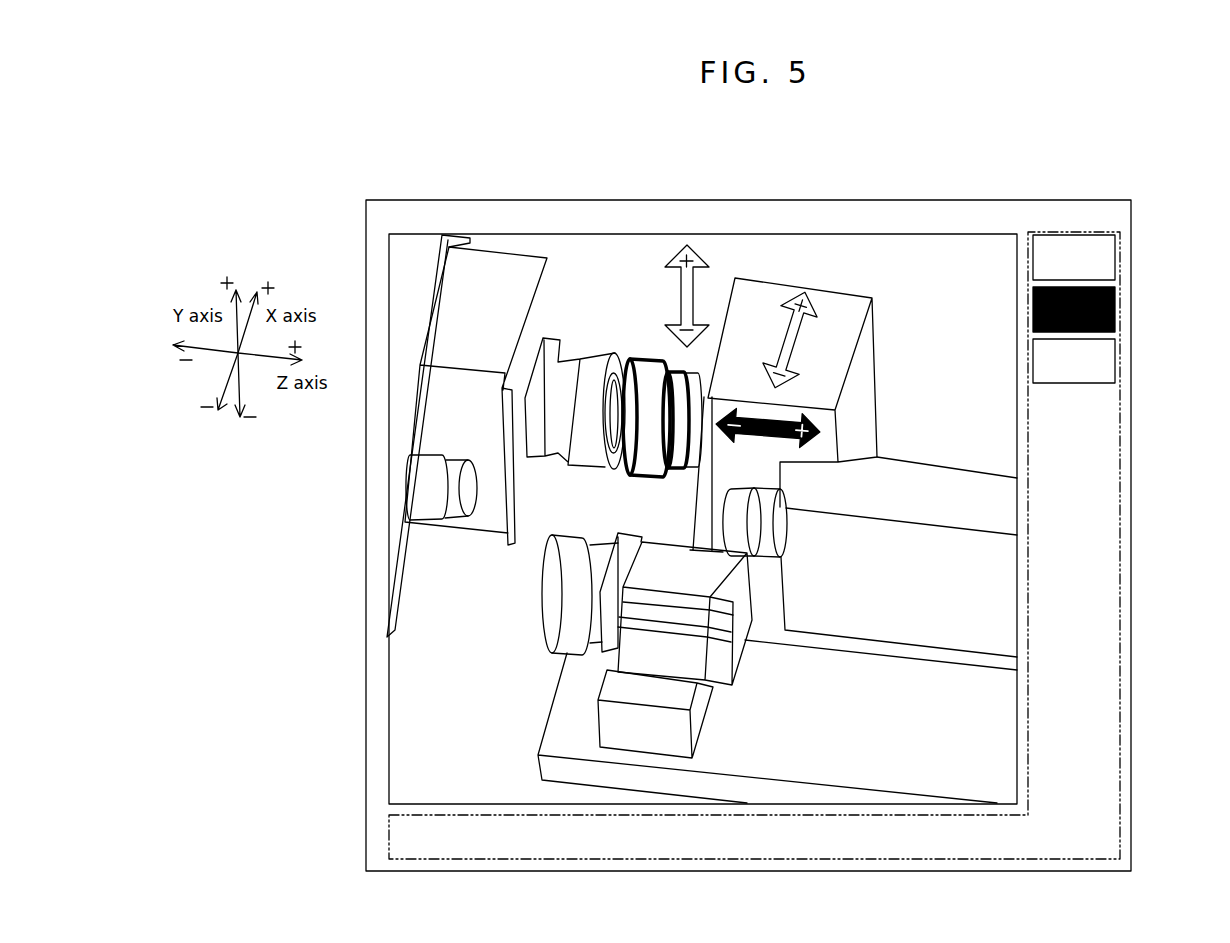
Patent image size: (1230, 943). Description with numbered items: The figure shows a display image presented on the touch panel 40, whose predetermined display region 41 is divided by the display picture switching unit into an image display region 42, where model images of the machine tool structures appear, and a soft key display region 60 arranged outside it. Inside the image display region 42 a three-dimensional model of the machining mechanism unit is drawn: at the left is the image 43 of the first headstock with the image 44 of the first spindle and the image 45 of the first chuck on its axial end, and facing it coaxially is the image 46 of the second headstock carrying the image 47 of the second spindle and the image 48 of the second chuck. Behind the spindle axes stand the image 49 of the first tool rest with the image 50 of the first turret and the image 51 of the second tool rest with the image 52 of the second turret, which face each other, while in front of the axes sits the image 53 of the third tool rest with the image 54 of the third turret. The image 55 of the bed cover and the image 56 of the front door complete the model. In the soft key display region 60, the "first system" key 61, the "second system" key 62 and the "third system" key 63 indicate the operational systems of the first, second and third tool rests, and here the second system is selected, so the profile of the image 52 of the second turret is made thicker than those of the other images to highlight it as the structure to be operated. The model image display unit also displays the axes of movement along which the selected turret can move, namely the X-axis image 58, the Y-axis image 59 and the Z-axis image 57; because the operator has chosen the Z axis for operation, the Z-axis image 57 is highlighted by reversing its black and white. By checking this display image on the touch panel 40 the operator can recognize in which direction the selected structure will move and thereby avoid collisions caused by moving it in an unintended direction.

The touch panel 40 is at (704, 509).
The display region 41 is at (477, 213).
The image display region 42 is at (717, 233).
The image of the first headstock 43 is at (408, 562).
The image of the first spindle 44 is at (430, 513).
The image of the first chuck 45 is at (455, 512).
The image of the second headstock 46 is at (953, 478).
The image of the second spindle 47 is at (765, 503).
The image of the second chuck 48 is at (733, 502).
The image of the first tool rest 49 is at (525, 287).
The image of the first turret 50 is at (590, 367).
The image of the second tool rest 51 is at (852, 315).
The image of the second turret 52 is at (653, 368).
The image of the third tool rest 53 is at (737, 647).
The image of the third turret 54 is at (553, 640).
The image of the bed cover 55 is at (987, 762).
The image of the front door 56 is at (398, 385).
The Z-axis image 57 is at (783, 413).
The X-axis image 58 is at (783, 335).
The Y-axis image 59 is at (697, 290).
The soft key display region 60 is at (1133, 477).
The "first system" key 61 is at (1115, 252).
The "second system" key 62 is at (1115, 300).
The "third system" key 63 is at (1115, 347).